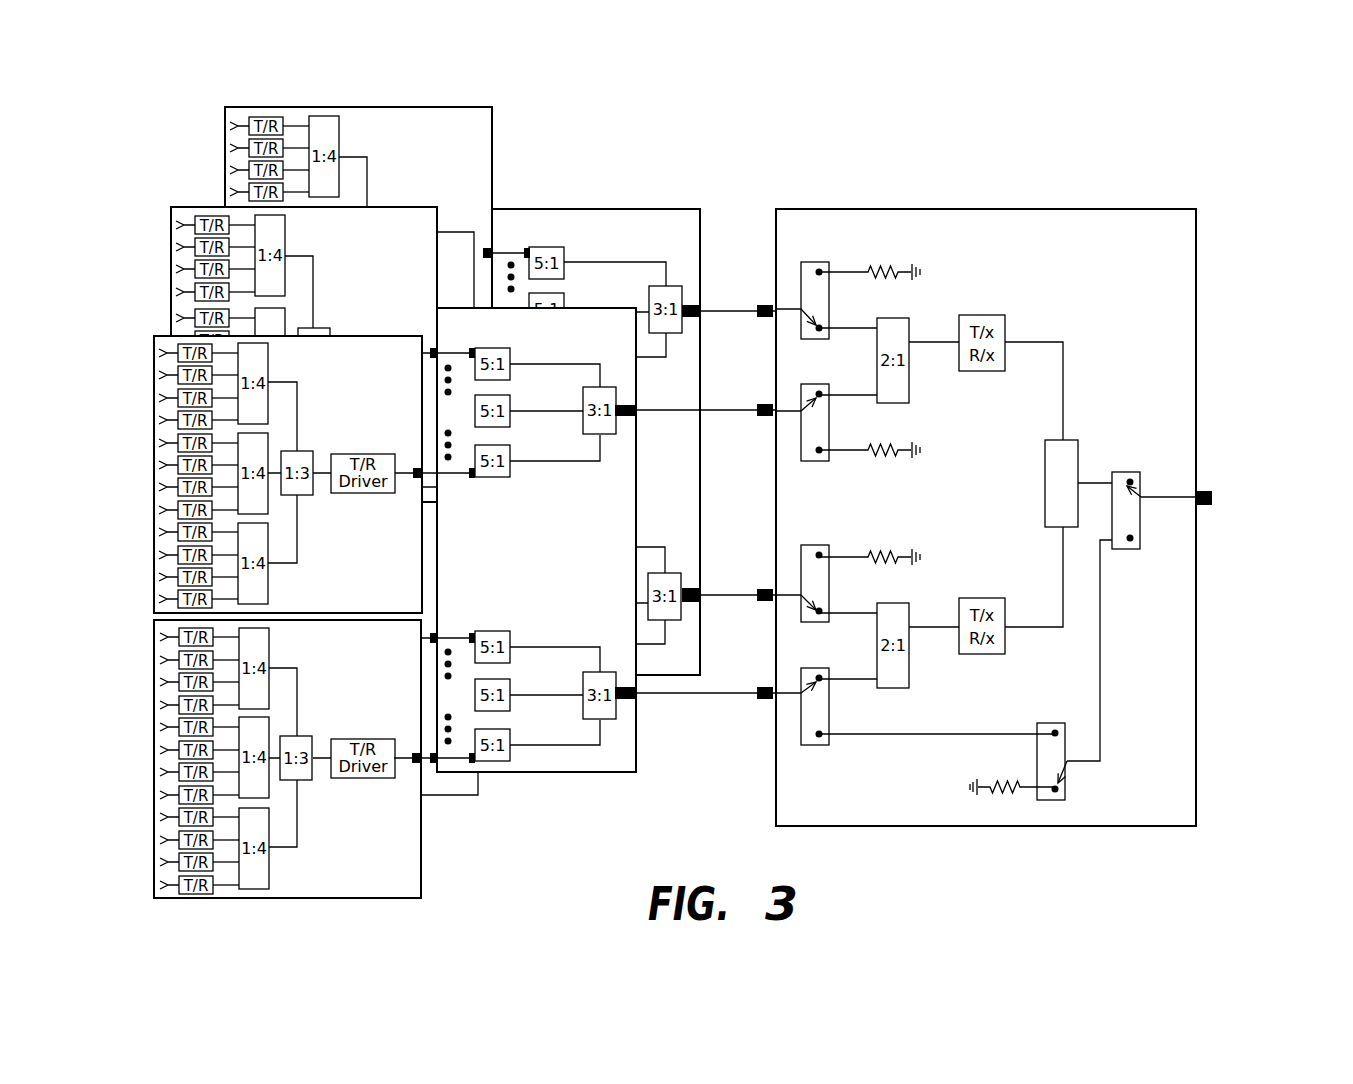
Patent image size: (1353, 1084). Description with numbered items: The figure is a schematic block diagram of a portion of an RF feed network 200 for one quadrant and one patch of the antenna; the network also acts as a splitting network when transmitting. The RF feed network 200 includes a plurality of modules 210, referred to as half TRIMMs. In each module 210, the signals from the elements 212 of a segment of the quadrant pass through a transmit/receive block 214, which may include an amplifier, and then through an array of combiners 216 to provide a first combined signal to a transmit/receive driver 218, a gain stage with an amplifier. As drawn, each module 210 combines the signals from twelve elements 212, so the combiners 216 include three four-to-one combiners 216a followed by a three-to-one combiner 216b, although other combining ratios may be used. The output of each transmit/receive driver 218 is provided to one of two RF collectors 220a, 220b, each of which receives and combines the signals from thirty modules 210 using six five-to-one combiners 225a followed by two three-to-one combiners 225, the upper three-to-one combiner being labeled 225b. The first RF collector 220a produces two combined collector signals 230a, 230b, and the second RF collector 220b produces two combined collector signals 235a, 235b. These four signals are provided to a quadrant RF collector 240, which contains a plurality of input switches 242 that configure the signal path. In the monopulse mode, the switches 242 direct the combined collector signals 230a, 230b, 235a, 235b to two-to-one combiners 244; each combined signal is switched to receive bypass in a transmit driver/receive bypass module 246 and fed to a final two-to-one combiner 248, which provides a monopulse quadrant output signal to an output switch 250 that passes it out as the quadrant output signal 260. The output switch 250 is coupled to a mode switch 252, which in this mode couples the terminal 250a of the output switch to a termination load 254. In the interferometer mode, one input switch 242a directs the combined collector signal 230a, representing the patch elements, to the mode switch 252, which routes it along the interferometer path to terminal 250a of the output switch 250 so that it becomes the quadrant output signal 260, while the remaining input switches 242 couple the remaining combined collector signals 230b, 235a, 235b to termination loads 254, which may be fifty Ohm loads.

The RF feed network 200 is at (710, 520).
The half TRIMM module 210 is at (373, 499).
The array element 212 is at (137, 752).
The transmit/receive block 214 is at (196, 895).
The combiner array 216 is at (301, 758).
The 1:4 combiner 216a is at (268, 358).
The 1:3 combiner 216b is at (302, 451).
The transmit/receive driver 218 is at (373, 493).
The first RF collector 220a is at (559, 567).
The second RF collector 220b is at (608, 422).
The 3:1 combiner 225 is at (532, 676).
The 5:1 combiner 225a is at (507, 478).
The 3:1 combiner 225b is at (610, 435).
The combined collector signal 230a is at (664, 696).
The combined collector signal 230b is at (742, 416).
The combined collector signal 235a is at (732, 594).
The combined collector signal 235b is at (733, 306).
The quadrant RF collector 240 is at (986, 493).
The input switch 242 is at (836, 281).
The input switch 242a is at (810, 747).
The 2:1 combiner 244 is at (910, 400).
The transmit driver/receive bypass module 246 is at (1023, 490).
The final 2:1 combiner 248 is at (1045, 465).
The output switch 250 is at (1154, 470).
The terminal 250a is at (1140, 549).
The mode switch 252 is at (1068, 783).
The termination load 254 is at (872, 550).
The quadrant output signal 260 is at (1206, 506).